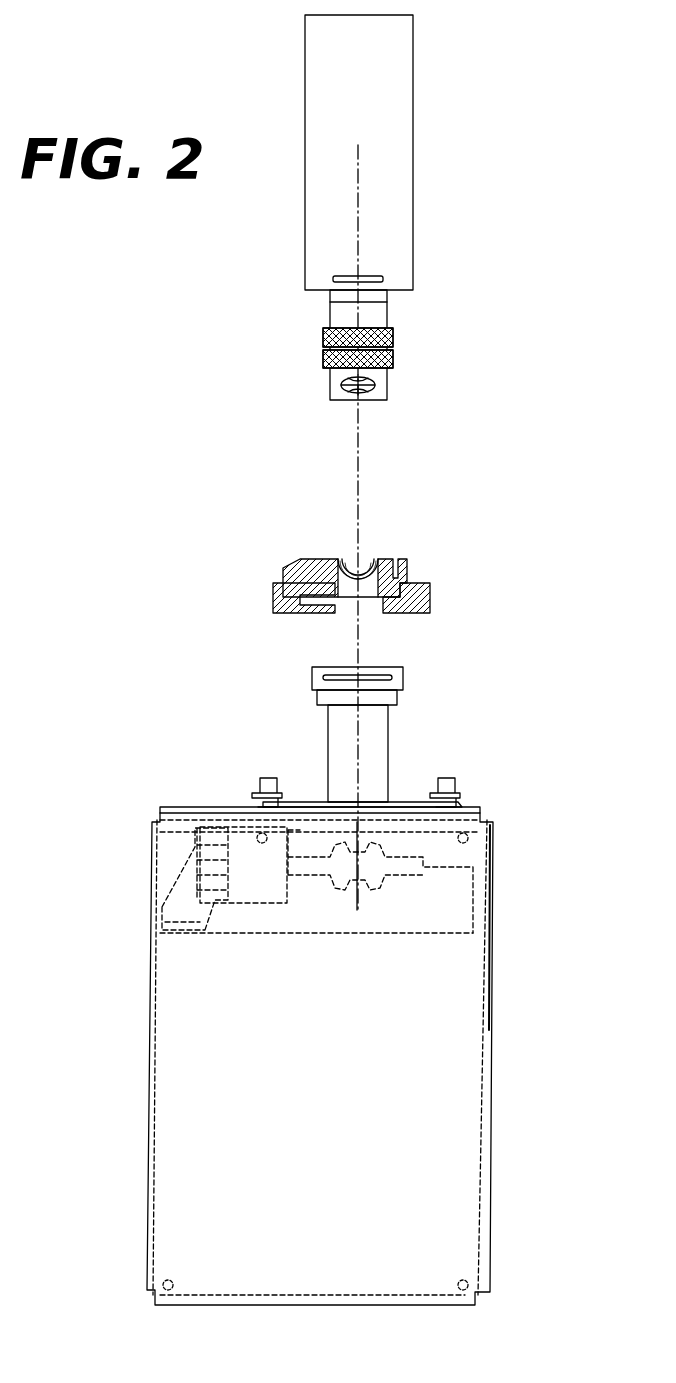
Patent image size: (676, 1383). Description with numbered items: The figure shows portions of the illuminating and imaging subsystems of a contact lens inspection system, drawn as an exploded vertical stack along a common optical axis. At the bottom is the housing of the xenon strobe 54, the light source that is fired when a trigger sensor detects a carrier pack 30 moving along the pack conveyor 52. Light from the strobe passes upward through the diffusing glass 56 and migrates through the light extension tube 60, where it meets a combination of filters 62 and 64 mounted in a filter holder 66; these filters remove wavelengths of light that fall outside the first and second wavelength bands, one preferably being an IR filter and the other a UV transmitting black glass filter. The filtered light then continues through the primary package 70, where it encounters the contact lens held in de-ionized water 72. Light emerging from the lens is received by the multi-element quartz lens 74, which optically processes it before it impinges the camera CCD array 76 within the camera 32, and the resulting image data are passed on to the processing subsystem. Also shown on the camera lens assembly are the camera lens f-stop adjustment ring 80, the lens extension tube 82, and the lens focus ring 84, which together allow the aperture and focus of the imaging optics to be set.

The carrier pack 30 is at (302, 561).
The camera 32 is at (413, 122).
The pack conveyor 52 is at (430, 598).
The xenon strobe 54 is at (373, 885).
The diffusing glass 56 is at (362, 806).
The light extension tube 60 is at (388, 737).
The filter 62 is at (323, 676).
The filter 64 is at (336, 690).
The filter holder 66 is at (403, 680).
The primary package 70 is at (347, 556).
The de-ionized water 72 is at (369, 556).
The multi-element quartz lens 74 is at (343, 385).
The camera CCD array 76 is at (376, 276).
The camera lens f-stop adjustment ring 80 is at (323, 338).
The lens extension tube 82 is at (388, 312).
The lens focus ring 84 is at (393, 360).